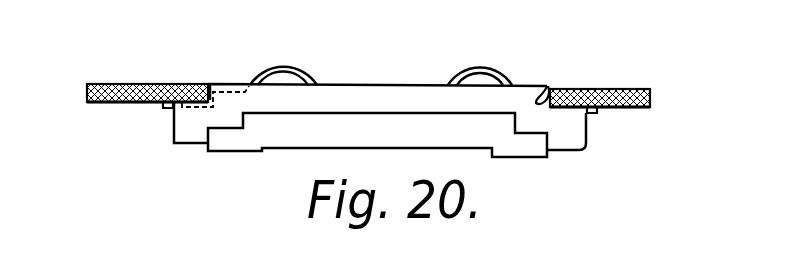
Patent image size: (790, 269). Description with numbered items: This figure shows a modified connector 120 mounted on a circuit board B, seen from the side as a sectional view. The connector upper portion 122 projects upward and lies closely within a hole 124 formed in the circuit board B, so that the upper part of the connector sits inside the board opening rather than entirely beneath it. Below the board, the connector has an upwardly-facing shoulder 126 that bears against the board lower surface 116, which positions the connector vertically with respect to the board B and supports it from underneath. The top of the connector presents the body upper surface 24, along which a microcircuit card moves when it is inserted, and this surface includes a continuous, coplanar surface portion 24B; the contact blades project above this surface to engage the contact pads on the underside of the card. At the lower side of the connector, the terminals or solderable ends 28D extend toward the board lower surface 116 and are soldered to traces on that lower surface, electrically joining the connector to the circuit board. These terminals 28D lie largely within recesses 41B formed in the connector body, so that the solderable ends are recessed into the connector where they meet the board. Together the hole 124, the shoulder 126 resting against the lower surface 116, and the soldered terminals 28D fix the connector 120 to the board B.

The modified connector 120 is at (162, 27).
The board lower surface 116 is at (117, 103).
The circuit board B is at (620, 88).
The connector upper portion 122 is at (354, 93).
The hole 124 is at (547, 86).
The coplanar surface portion 24B is at (330, 84).
The upper surface 24 is at (522, 84).
The upwardly-facing shoulder 126 is at (175, 85).
The terminals 28D is at (166, 110).
The recesses 41B is at (180, 142).